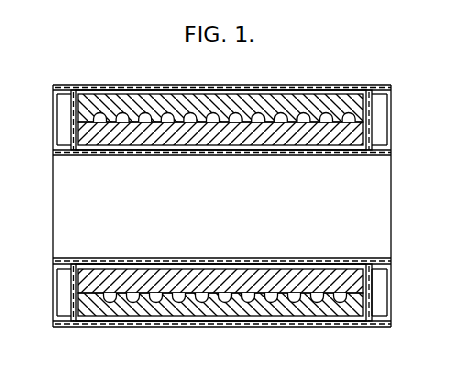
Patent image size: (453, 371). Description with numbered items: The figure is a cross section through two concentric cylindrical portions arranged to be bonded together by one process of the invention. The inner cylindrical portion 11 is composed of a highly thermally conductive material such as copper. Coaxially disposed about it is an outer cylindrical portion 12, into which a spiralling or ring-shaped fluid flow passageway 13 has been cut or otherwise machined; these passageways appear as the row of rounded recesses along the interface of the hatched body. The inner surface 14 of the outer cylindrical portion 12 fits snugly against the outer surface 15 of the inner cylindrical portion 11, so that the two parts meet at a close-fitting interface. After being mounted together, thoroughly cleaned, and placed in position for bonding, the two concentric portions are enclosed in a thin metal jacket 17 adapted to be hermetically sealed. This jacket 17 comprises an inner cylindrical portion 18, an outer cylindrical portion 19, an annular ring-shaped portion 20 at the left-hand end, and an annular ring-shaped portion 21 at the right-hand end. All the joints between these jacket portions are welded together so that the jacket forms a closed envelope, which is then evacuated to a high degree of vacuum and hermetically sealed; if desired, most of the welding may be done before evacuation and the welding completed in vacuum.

The inner cylindrical portion 11 is at (72, 136).
The outer cylindrical portion 12 is at (71, 108).
The fluid flow passageway 13 is at (128, 108).
The inner surface 14 is at (277, 97).
The outer surface 15 is at (290, 122).
The metal jacket 17 is at (78, 326).
The inner cylindrical portion 18 is at (60, 261).
The outer cylindrical portion 19 is at (135, 322).
The annular ring shaped portion 20 is at (72, 295).
The annular ring shaped portion 21 is at (375, 300).